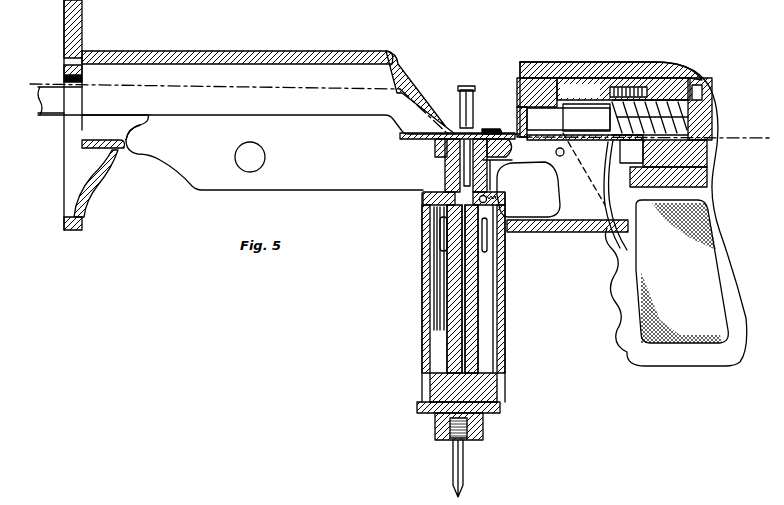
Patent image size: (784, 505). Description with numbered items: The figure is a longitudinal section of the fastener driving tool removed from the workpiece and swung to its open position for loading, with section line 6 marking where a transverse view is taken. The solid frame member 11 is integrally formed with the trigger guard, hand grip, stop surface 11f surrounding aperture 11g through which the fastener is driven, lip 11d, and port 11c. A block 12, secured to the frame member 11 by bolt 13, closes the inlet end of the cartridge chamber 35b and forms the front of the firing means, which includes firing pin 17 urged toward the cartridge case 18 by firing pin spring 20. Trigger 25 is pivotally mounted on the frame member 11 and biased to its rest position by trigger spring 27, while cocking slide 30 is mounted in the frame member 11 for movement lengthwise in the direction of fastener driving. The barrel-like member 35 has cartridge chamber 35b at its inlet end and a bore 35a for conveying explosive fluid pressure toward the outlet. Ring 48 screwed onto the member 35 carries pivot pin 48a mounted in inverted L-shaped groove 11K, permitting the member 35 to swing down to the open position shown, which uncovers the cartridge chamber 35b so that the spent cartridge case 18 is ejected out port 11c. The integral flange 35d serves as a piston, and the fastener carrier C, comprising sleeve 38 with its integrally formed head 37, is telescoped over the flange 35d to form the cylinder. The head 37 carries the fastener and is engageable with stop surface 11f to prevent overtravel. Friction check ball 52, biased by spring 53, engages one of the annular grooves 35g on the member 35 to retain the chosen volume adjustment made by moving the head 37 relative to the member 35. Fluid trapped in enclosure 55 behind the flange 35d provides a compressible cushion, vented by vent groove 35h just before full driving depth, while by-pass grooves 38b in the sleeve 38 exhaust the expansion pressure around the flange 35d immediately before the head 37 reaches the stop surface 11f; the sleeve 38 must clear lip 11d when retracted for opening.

The section line 6- 6 is at (38, 72).
The frame member 11 is at (343, 52).
The stop surface 11f is at (82, 70).
The aperture 11g is at (62, 118).
The lip 11d is at (142, 141).
The port 11c is at (403, 63).
The inverted L-shaped groove 11K is at (492, 132).
The block 12 is at (590, 62).
The bolt 13 is at (710, 80).
The firing pin 17 is at (598, 105).
The cartridge case 18 is at (460, 100).
The firing pin spring 20 is at (647, 139).
The trigger 25 is at (560, 198).
The trigger spring 27 is at (660, 175).
The cocking slide 30 is at (244, 104).
The ring 48 is at (436, 151).
The pivot pin 48a is at (497, 158).
The cartridge chamber 35b is at (450, 163).
The friction check ball 52 is at (472, 200).
The spring 53 is at (492, 207).
The by-pass groove 38b is at (440, 250).
The bore 35a is at (463, 280).
The annular groove 35g is at (484, 222).
The member 35 is at (473, 288).
The enclosure 55 is at (483, 335).
The sleeve 38 is at (422, 323).
The vent groove 35h is at (450, 353).
The flange 35d is at (435, 388).
The head 37 is at (497, 408).
The fastener carrier C is at (492, 418).